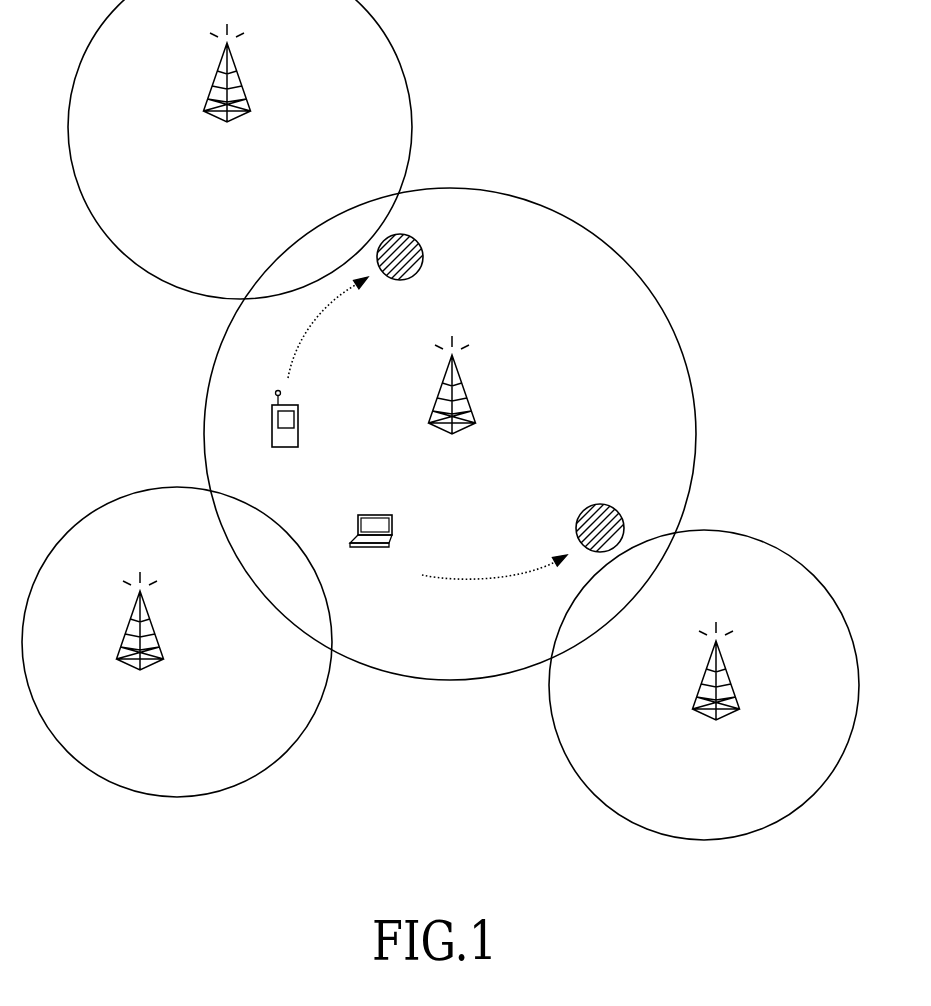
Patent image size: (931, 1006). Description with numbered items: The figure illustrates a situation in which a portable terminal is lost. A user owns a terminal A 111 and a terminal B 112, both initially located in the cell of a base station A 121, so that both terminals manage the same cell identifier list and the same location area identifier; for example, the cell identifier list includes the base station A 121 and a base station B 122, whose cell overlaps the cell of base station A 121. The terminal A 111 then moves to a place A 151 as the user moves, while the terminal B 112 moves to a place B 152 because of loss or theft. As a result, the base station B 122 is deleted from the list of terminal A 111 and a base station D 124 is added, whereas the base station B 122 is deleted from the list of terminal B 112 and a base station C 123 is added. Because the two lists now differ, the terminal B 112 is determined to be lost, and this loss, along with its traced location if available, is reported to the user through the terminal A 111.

The terminal A 111 is at (298, 424).
The terminal B 112 is at (392, 521).
The base station A 121 is at (466, 392).
The base station B 122 is at (153, 627).
The base station C 123 is at (729, 677).
The base station D 124 is at (240, 77).
The place A 151 is at (423, 257).
The place B 152 is at (623, 519).